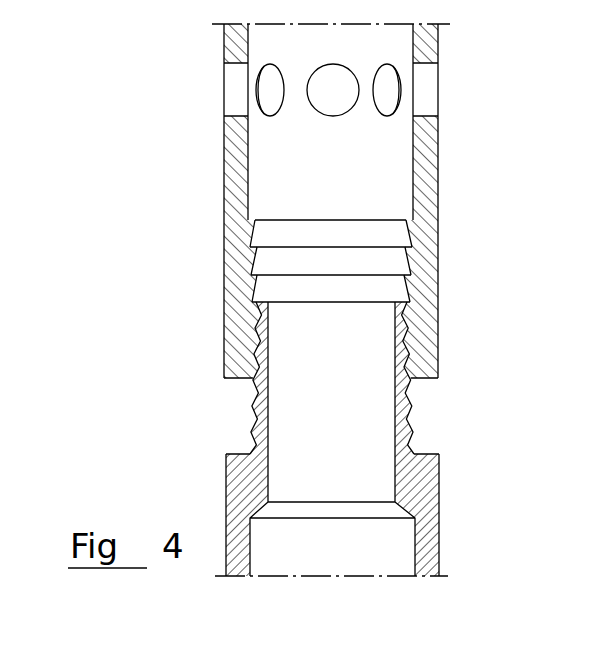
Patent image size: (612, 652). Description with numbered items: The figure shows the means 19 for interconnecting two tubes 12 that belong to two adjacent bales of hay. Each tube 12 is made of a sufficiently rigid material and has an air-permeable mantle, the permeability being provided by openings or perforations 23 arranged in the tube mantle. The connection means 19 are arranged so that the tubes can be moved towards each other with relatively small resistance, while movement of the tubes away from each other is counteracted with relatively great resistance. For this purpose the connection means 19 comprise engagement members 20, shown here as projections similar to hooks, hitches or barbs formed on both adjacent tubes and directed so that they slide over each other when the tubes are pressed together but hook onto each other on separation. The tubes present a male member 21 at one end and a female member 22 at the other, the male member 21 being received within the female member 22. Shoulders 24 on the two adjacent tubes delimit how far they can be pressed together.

The tube 12 is at (232, 175).
The means for interconnection of tubes 19 is at (140, 422).
The engagement members 20 is at (262, 258).
The male member 21 is at (430, 414).
The female member 22 is at (340, 258).
The openings or perforations 23 is at (232, 90).
The shoulders 24 is at (228, 377).